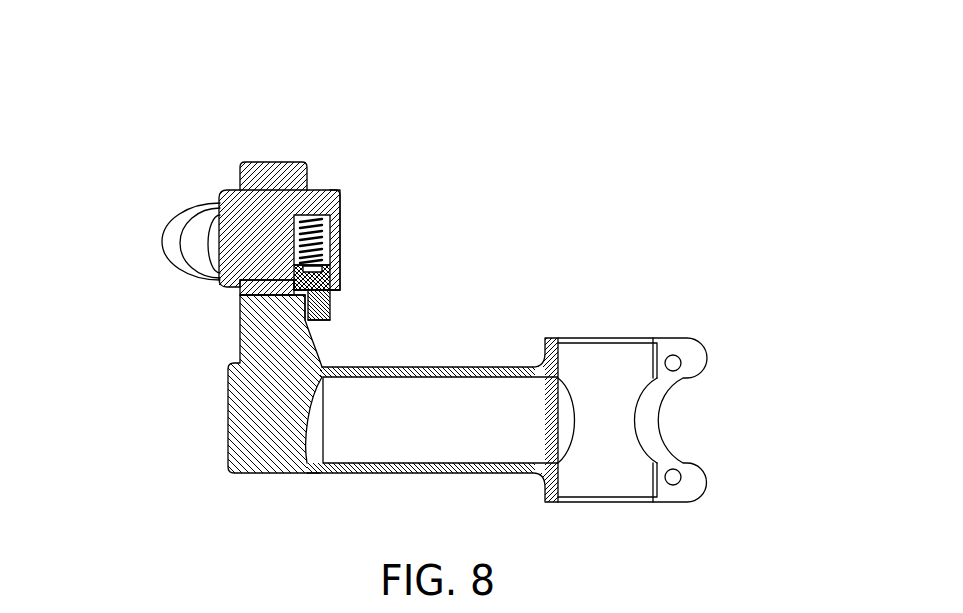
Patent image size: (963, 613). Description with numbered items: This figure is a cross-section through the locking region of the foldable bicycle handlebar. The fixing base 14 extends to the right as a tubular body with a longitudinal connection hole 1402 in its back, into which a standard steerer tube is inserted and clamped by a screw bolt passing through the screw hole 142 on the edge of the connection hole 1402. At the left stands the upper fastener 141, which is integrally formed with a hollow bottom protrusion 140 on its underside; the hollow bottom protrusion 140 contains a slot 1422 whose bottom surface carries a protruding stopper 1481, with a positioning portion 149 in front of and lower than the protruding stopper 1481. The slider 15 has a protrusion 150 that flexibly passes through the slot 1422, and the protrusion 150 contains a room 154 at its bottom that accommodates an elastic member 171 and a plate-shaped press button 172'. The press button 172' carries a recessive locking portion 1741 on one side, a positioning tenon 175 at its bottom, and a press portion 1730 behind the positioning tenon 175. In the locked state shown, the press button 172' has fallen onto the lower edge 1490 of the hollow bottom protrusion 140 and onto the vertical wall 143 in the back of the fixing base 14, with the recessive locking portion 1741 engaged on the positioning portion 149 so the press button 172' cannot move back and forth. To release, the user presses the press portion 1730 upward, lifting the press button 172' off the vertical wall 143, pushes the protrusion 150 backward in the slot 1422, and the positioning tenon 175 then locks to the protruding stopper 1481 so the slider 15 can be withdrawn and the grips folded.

The fixing base 14 is at (493, 367).
The slider 15 is at (218, 240).
The hollow bottom protrusion 140 is at (305, 293).
The upper fastener 141 is at (288, 162).
The screw hole 142 is at (675, 361).
The vertical wall 143 is at (306, 297).
The positioning portion 149 is at (305, 295).
The protrusion 150 is at (340, 190).
The room 154 is at (325, 245).
The elastic member 171 is at (339, 223).
The press button 172' is at (458, 257).
The positioning tenon 175 is at (307, 294).
The connection hole 1402 is at (593, 467).
The slot 1422 is at (262, 192).
The protruding stopper 1481 is at (340, 280).
The lower edge 1490 is at (305, 294).
The press portion 1730 is at (328, 322).
The recessive locking portion 1741 is at (305, 293).